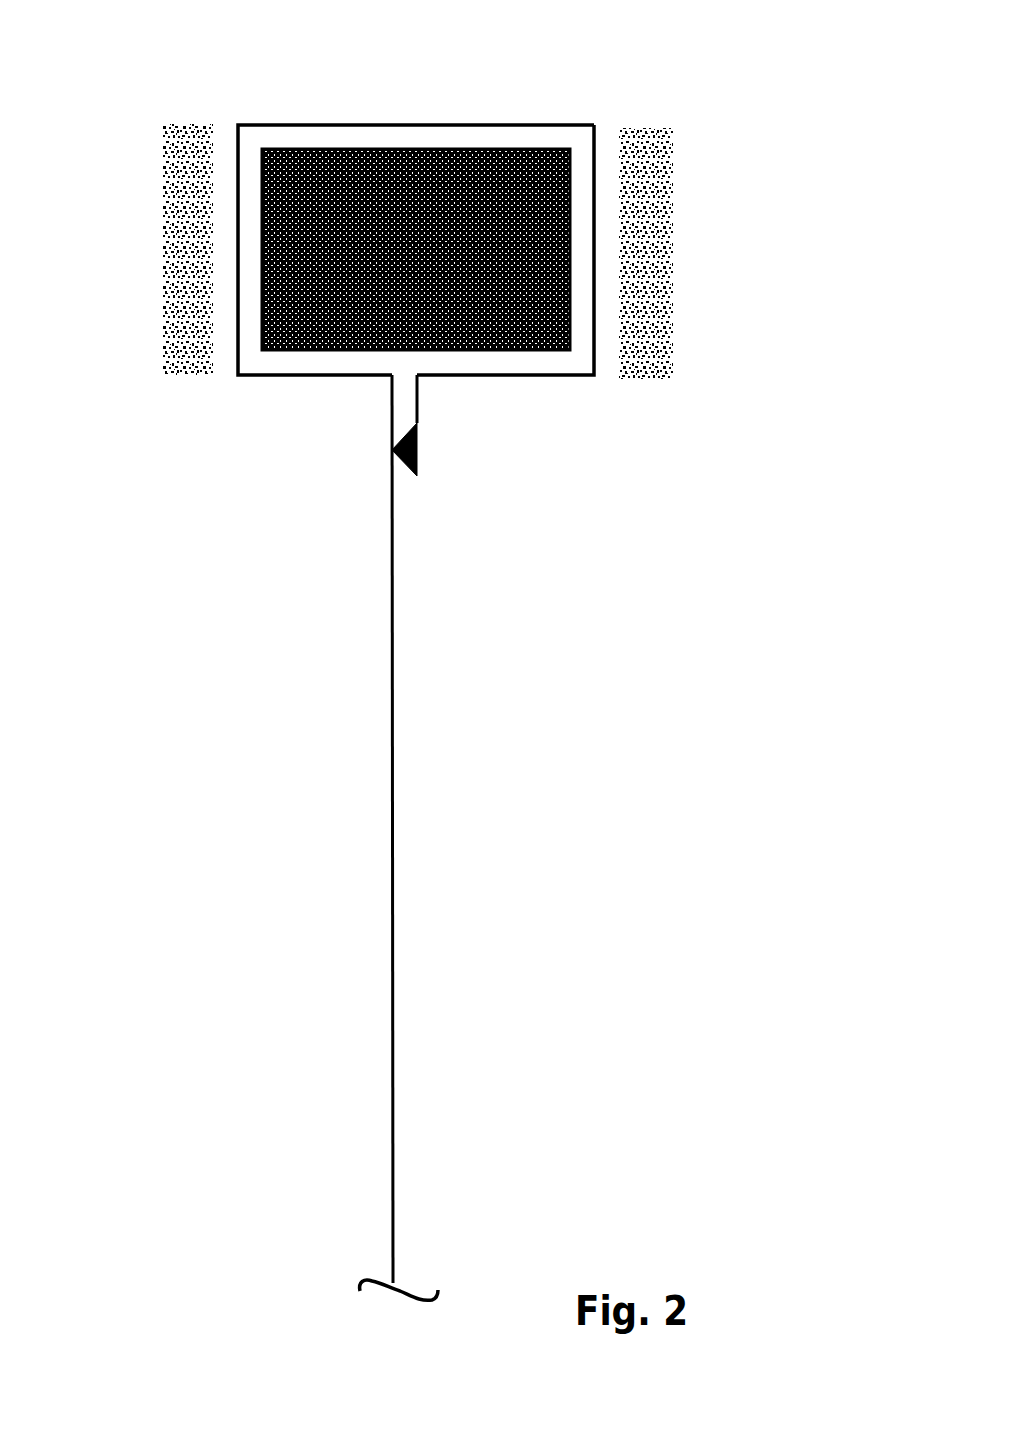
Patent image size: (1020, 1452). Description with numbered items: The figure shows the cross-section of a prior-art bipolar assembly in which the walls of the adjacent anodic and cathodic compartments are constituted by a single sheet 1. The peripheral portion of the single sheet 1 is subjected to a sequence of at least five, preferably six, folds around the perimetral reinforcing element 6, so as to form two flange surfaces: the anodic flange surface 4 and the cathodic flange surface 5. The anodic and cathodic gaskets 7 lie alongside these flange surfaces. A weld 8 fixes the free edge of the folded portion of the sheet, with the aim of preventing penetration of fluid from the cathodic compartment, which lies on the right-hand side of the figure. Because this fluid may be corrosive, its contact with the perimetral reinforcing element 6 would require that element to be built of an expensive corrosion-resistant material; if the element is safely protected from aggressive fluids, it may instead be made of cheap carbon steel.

The single sheet 1 is at (393, 550).
The anodic flange surface 4 is at (243, 165).
The cathodic flange surface 5 is at (596, 167).
The perimetral reinforcing element 6 is at (440, 190).
The anodic and cathodic gaskets 7 is at (188, 277).
The weld 8 is at (425, 455).